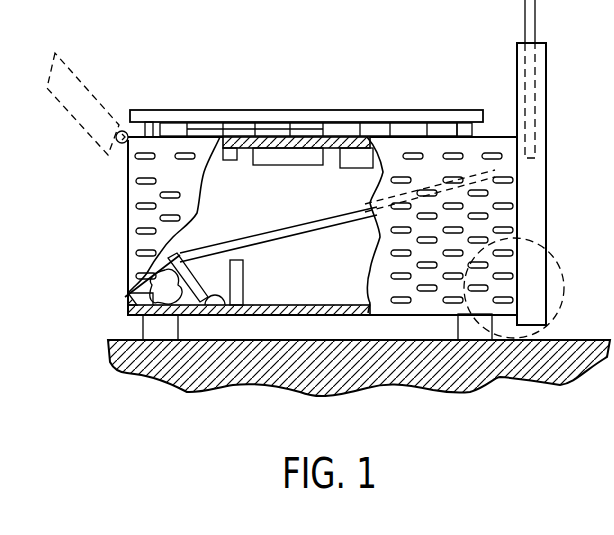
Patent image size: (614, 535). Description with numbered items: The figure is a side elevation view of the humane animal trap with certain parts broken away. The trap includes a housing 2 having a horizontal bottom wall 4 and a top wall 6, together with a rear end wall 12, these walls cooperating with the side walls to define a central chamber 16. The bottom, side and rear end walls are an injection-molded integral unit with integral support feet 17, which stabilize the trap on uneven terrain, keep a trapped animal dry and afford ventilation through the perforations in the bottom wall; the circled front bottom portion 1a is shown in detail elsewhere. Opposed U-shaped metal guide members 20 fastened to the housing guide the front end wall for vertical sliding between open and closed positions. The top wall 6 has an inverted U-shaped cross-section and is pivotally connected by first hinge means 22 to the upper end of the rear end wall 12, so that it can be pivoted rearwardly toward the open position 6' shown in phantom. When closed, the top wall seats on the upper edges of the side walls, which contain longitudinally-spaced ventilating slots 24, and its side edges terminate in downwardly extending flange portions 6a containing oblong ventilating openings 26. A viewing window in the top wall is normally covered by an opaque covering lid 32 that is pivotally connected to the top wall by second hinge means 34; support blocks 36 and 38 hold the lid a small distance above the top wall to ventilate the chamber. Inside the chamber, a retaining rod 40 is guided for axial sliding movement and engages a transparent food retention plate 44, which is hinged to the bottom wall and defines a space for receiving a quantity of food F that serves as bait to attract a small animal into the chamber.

The housing 2 is at (122, 221).
The bottom wall 4 is at (270, 373).
The top wall 6 is at (241, 97).
The open position 6' is at (88, 88).
The flange portions 6a is at (518, 215).
The rear end wall 12 is at (128, 293).
The central chamber 16 is at (270, 208).
The support feet 17 is at (134, 373).
The guide members 20 is at (542, 72).
The first hinge means 22 is at (116, 139).
The ventilating slots 24 is at (272, 157).
The ventilating openings 26 is at (130, 166).
The covering lid 32 is at (299, 110).
The second hinge means 34 is at (372, 124).
The support block 36 is at (150, 122).
The support block 38 is at (462, 127).
The retaining rod 40 is at (296, 235).
The food retention plate 44 is at (187, 308).
The food F is at (152, 325).
The detail region 1a is at (530, 355).